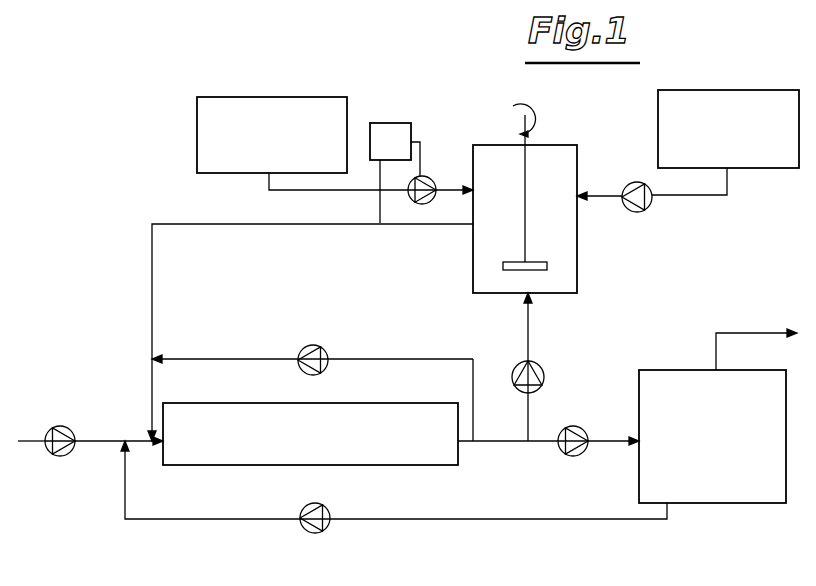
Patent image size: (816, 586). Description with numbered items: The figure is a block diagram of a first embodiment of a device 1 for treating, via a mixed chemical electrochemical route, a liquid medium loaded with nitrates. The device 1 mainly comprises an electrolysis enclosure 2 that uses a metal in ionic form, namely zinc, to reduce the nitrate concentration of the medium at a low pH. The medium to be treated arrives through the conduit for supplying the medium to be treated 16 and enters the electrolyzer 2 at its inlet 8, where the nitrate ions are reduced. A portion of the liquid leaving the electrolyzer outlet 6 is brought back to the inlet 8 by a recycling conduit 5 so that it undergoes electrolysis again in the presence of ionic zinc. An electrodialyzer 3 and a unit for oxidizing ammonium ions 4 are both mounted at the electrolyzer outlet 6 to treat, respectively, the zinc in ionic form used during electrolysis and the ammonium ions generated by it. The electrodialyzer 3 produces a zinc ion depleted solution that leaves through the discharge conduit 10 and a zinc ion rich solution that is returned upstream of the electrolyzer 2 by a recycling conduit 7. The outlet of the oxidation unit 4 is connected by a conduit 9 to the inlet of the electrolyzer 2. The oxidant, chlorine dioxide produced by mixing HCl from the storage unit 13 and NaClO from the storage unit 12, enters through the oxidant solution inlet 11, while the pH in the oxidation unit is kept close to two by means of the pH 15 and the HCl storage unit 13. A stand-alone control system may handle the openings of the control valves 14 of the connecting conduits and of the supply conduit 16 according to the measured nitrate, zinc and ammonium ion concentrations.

The device 1 is at (175, 32).
The electrolysis enclosure 2 is at (310, 434).
The electrodialyzer 3 is at (712, 436).
The unit for oxidizing ammonium ions 4 is at (525, 198).
The recycling conduit 5 is at (388, 358).
The electrolyzer outlet 6 is at (466, 444).
The recycling conduit 7 is at (670, 506).
The inlet 8 is at (100, 441).
The conduit 9 is at (230, 225).
The discharge conduit 10 is at (748, 333).
The oxidant solution inlet 11 is at (612, 200).
The storage unit 12 is at (725, 142).
The storage unit 13 is at (302, 143).
The control valves 14 is at (430, 178).
The pH 15 is at (395, 173).
The conduit for supplying the medium to be treated 16 is at (33, 441).